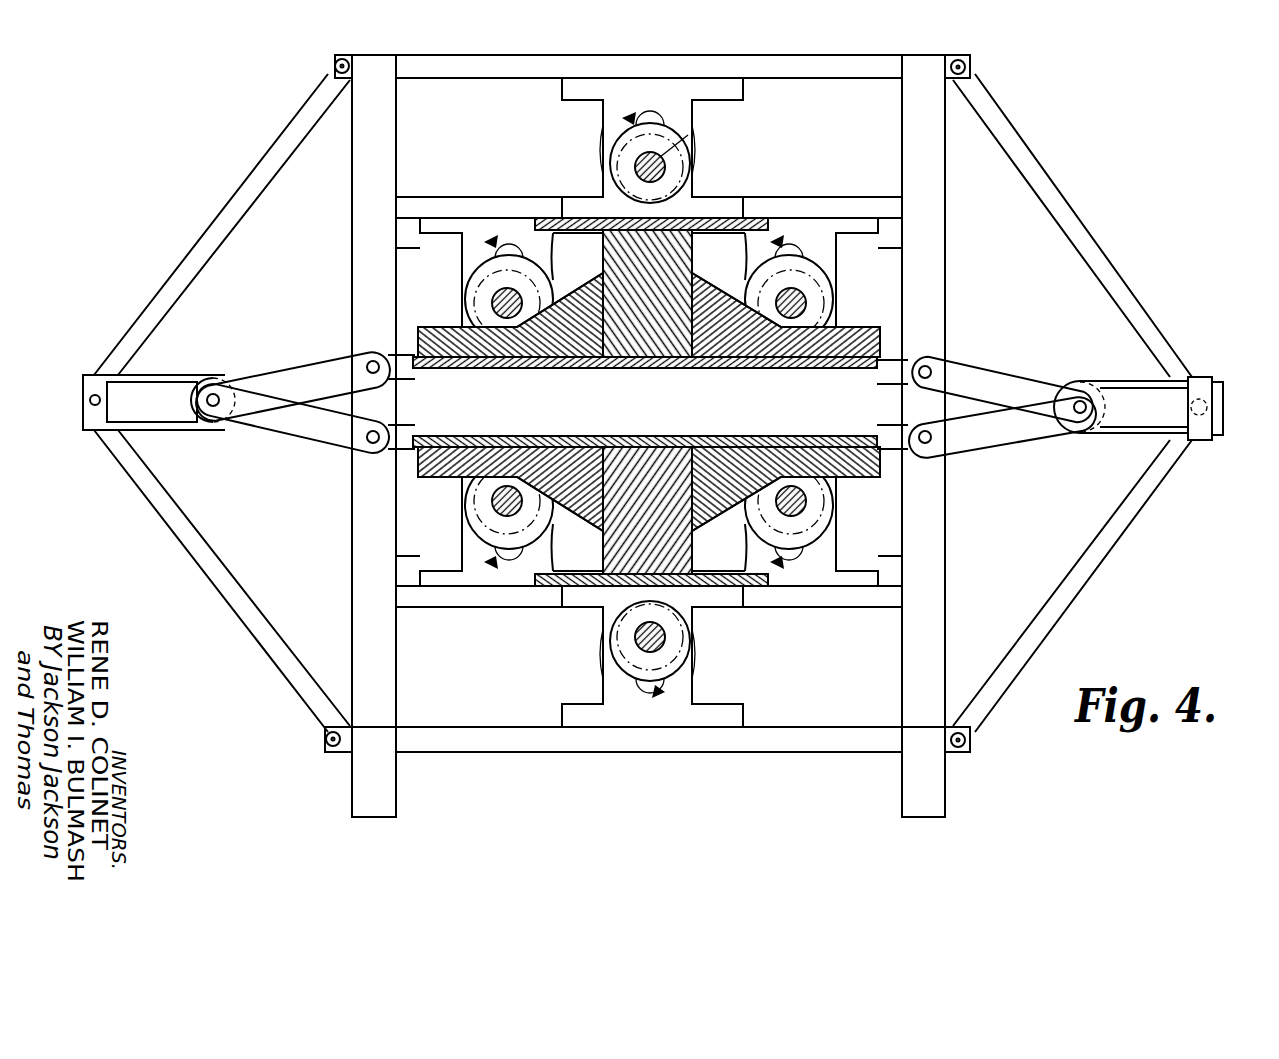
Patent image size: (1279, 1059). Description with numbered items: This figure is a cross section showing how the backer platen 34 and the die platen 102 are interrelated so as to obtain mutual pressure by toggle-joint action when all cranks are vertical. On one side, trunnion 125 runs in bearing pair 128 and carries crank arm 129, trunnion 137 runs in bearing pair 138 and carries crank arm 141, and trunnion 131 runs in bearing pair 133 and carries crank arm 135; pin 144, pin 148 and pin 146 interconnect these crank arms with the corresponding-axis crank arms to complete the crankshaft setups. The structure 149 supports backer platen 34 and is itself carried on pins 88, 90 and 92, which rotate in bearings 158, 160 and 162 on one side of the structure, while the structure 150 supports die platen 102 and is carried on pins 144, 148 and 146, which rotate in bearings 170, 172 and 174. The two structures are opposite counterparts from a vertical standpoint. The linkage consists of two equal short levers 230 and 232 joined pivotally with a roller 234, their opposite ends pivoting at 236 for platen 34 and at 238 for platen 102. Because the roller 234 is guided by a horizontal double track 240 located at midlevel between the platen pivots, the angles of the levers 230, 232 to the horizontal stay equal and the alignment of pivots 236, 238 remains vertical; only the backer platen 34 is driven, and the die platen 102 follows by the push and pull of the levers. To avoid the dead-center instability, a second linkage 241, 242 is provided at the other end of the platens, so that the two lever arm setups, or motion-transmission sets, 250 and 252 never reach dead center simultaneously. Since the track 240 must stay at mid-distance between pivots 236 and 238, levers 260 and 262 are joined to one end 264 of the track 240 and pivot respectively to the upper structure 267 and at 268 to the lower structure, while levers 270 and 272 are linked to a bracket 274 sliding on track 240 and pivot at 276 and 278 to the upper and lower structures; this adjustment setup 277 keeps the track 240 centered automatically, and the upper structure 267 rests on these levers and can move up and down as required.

The backer platen 34 is at (660, 436).
The pin 88 is at (491, 495).
The pin 90 is at (807, 498).
The pin 92 is at (630, 633).
The die platen 102 is at (672, 370).
The trunnion 125 is at (524, 242).
The bearing pair 128 is at (468, 268).
The crank arm 129 is at (490, 238).
The trunnion 131 is at (655, 128).
The bearing pair 133 is at (603, 116).
The crank arm 135 is at (620, 118).
The trunnion 137 is at (776, 238).
The bearing pair 138 is at (838, 254).
The crank arm 141 is at (815, 242).
The pin 144 is at (491, 303).
The pin 146 is at (696, 120).
The pin 148 is at (807, 304).
The structure 149 is at (880, 466).
The structure 150 is at (888, 328).
The bearing 158 is at (470, 520).
The bearing 160 is at (826, 514).
The bearing 162 is at (692, 646).
The bearing 170 is at (400, 248).
The bearing 172 is at (838, 278).
The bearing 174 is at (698, 144).
The short lever 230 is at (276, 440).
The short lever 232 is at (262, 372).
The roller 234 is at (204, 400).
The pivot 236 is at (364, 445).
The pivot 238 is at (365, 352).
The horizontal double track 240 is at (152, 432).
The second linkage lever 241 is at (1004, 370).
The second linkage lever 242 is at (1000, 446).
The lever arm setup 250 is at (195, 380).
The lever arm setup 252 is at (1118, 382).
The lever 260 is at (272, 172).
The lever 262 is at (196, 540).
The track end 264 is at (82, 403).
The upper structure 267 is at (338, 62).
The pivot 268 is at (327, 744).
The lever 270 is at (1062, 188).
The lever 272 is at (1154, 488).
The bracket 274 is at (1205, 377).
The pivot 276 is at (970, 68).
The adjustment setup 277 is at (1060, 612).
The pivot 278 is at (968, 747).